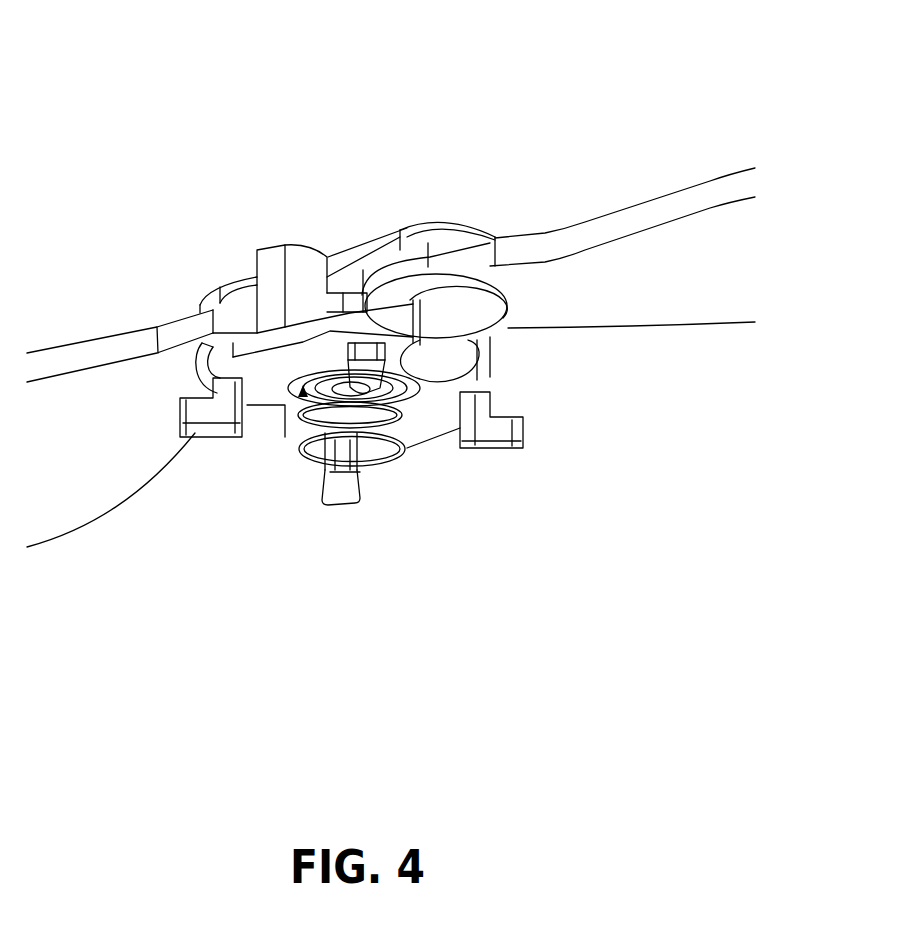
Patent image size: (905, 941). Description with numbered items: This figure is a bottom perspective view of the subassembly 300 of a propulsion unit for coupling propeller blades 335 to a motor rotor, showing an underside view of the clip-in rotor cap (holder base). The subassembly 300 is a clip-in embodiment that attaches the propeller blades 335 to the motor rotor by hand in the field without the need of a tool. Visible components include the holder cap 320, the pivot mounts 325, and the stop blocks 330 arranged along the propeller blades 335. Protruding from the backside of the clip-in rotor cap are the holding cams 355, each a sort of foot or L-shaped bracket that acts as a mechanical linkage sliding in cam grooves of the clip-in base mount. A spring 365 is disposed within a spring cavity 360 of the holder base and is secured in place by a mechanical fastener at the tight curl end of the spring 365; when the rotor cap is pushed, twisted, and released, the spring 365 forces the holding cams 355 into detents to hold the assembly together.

The subassembly 300 is at (155, 80).
The holder cap 320 is at (357, 253).
The pivot mounts 325 is at (220, 263).
The stop blocks 330 is at (273, 256).
The propeller blades 335 is at (738, 276).
The holding cams 355 is at (190, 430).
The spring cavity 360 is at (280, 433).
The spring 365 is at (403, 448).